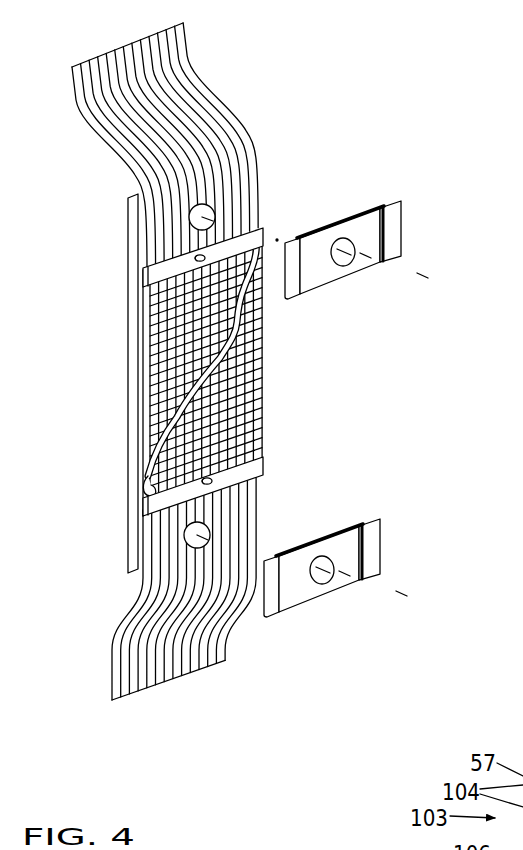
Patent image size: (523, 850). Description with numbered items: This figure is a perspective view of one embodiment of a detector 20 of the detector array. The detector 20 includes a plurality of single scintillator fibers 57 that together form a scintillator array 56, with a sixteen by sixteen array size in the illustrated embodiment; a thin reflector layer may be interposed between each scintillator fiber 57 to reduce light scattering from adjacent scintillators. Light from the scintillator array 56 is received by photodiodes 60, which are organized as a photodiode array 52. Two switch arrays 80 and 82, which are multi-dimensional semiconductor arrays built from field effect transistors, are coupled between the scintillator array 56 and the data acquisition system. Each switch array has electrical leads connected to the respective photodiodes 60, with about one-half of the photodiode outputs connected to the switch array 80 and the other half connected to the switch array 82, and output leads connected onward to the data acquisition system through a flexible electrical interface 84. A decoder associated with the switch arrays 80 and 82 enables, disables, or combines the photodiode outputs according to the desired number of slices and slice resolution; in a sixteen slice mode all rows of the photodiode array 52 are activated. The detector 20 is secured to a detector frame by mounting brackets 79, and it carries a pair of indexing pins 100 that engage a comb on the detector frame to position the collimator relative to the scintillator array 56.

The detector 20 is at (405, 42).
The photodiode array 52 is at (126, 467).
The scintillator array 56 is at (172, 420).
The scintillator fiber 57 is at (146, 483).
The photodiode 60 is at (150, 383).
The mounting bracket 79 is at (368, 221).
The switch array 80 is at (143, 274).
The switch array 82 is at (140, 551).
The flexible electrical interface 84 is at (242, 128).
The indexing pin 100 is at (206, 256).